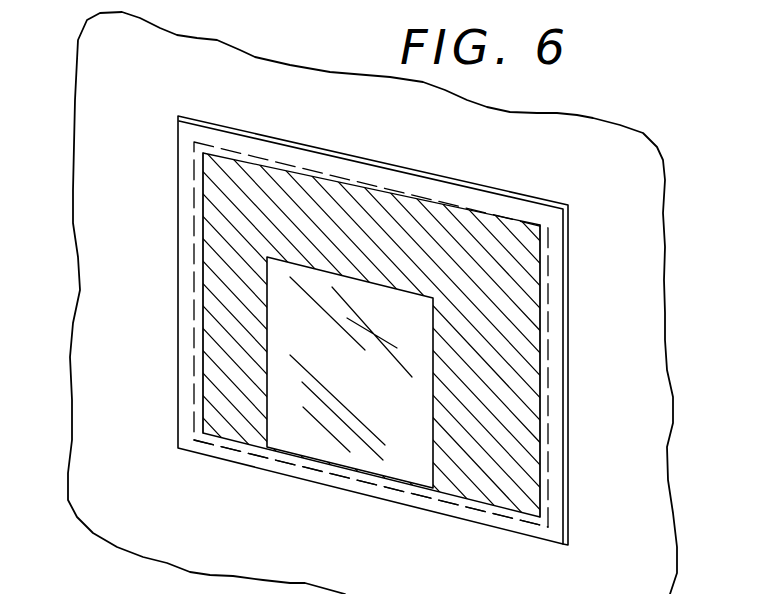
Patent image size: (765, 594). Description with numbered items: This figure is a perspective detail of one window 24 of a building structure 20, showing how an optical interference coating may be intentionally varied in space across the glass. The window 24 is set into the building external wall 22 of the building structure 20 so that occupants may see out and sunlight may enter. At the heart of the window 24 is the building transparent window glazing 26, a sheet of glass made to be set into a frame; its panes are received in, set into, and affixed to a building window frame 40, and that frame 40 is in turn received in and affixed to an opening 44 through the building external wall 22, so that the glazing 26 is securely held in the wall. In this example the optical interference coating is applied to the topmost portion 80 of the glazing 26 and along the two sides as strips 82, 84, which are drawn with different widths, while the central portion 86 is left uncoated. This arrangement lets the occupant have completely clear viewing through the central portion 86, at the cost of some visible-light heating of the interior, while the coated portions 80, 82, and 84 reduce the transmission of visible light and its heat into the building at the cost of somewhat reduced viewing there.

The building structure 20 is at (637, 181).
The building external wall 22 is at (86, 88).
The window 24 is at (220, 222).
The building transparent window glazing 26 is at (286, 360).
The building window frame 40 is at (548, 242).
The opening 44 is at (530, 446).
The topmost portion 80 is at (292, 197).
The side strip of optical interference coating 82 is at (217, 328).
The side strip of optical interference coating 84 is at (508, 348).
The central portion 86 is at (358, 377).